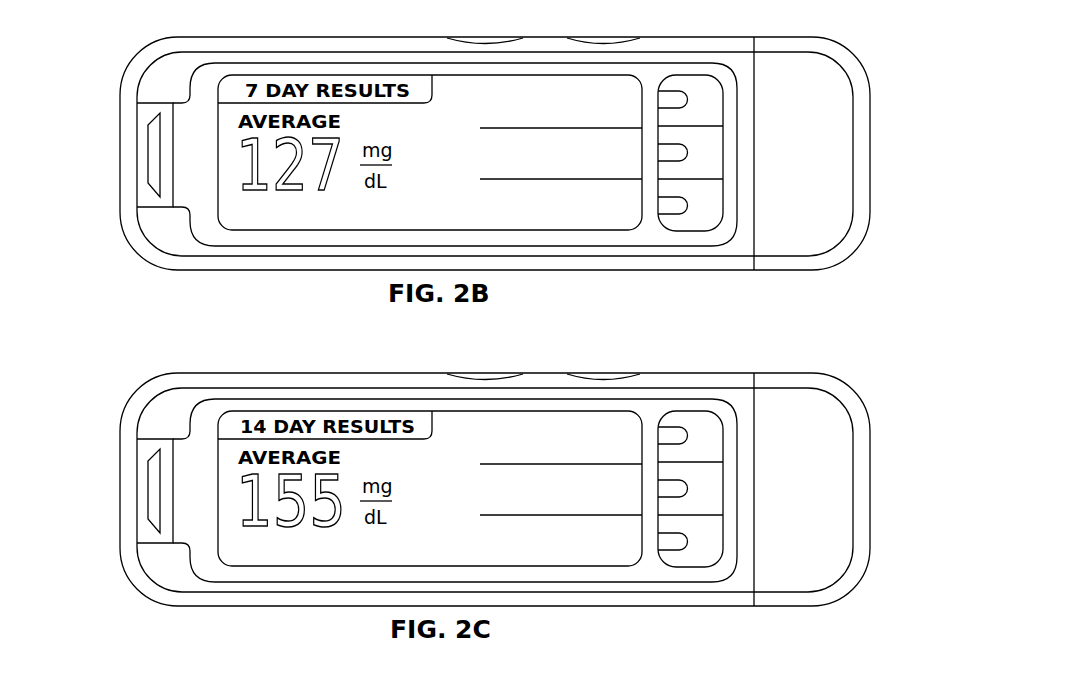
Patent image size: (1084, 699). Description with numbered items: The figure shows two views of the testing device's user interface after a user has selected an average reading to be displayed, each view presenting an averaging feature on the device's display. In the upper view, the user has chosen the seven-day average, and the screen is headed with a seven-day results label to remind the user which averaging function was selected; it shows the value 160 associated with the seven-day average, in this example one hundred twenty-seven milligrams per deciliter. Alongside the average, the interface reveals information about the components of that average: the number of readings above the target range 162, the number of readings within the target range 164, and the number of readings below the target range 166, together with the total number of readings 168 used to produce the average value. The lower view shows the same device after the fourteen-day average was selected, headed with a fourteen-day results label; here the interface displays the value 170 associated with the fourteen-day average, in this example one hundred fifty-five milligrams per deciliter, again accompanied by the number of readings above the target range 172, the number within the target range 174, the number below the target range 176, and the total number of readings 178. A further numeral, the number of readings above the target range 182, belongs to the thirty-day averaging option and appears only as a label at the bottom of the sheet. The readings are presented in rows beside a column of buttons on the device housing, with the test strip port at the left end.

In FIG. 2B, the value associated with the 7 day average 160 is at (232, 168).
In FIG. 2B, the number of readings above the target range 162 is at (581, 84).
In FIG. 2B, the number of readings within the target range 164 is at (628, 138).
In FIG. 2B, the number of readings below the target range 166 is at (615, 218).
In FIG. 2B, the total number of readings 168 is at (255, 223).
In FIG. 2C, the value associated with the 14 day average 170 is at (141, 491).
In FIG. 2C, the number of readings above the target range 172 is at (577, 393).
In FIG. 2C, the number of readings within the target range 174 is at (723, 500).
In FIG. 2C, the number of readings below the target range 176 is at (577, 587).
In FIG. 2C, the total number of readings 178 is at (290, 593).
In FIG. 2C, the number of readings above the target range 182 is at (618, 684).